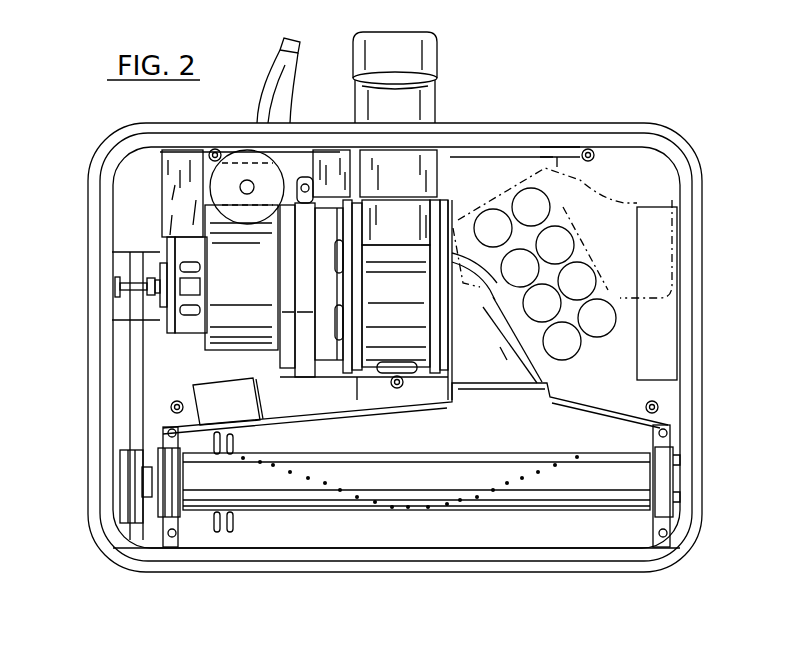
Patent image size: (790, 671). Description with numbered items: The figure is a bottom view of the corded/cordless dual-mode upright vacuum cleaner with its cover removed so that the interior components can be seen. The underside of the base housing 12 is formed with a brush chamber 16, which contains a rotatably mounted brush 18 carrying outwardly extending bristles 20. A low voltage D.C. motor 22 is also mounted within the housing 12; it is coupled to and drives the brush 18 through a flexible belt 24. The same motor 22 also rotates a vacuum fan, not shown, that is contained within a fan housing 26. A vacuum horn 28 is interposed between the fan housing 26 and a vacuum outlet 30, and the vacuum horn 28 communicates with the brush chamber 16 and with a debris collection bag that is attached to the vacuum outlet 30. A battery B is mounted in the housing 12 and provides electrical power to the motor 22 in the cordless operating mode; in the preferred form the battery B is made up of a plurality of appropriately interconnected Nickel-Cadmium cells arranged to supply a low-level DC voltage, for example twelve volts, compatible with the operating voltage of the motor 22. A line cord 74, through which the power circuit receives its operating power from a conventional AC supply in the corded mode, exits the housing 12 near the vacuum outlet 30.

The base housing 12 is at (692, 317).
The brush chamber 16 is at (497, 550).
The brush 18 is at (285, 483).
The bristles 20 is at (218, 532).
The low voltage D.C. motor 22 is at (228, 333).
The flexible belt 24 is at (133, 422).
The fan housing 26 is at (385, 317).
The vacuum horn 28 is at (498, 367).
The vacuum outlet 30 is at (410, 108).
The line cord 74 is at (285, 45).
The battery B is at (586, 242).